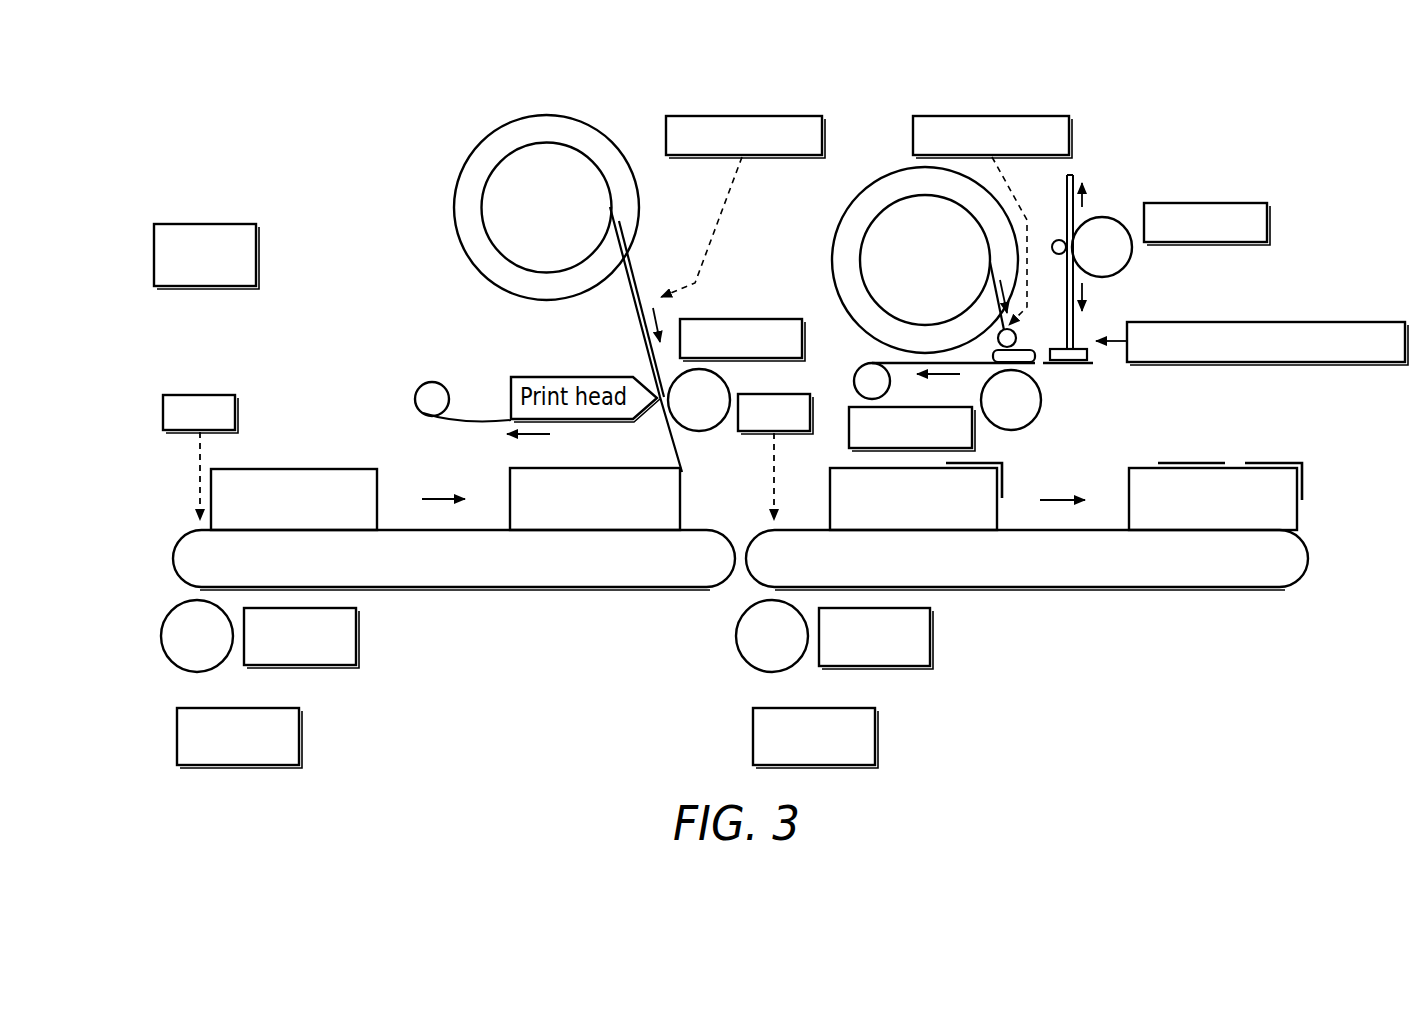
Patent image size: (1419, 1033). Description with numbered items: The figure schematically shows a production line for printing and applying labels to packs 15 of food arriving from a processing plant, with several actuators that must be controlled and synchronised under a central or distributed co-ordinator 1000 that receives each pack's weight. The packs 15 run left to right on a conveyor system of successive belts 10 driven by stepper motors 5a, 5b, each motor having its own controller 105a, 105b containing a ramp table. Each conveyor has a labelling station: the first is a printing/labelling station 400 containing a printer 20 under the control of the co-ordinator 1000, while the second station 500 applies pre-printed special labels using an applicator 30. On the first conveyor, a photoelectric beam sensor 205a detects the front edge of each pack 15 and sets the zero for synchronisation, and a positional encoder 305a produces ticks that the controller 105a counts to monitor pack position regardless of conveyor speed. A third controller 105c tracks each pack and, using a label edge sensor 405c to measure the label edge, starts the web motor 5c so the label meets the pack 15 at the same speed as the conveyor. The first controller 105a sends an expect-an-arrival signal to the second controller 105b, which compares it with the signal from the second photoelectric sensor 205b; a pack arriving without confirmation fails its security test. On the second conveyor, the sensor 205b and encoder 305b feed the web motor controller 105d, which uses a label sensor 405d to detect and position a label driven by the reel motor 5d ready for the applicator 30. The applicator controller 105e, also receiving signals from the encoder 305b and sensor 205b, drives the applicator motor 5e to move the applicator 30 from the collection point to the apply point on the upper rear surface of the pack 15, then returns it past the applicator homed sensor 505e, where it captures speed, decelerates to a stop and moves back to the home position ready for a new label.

The co-ordinator 1000 is at (152, 201).
The printing/labelling station 400 is at (426, 117).
The labelling station 500 is at (868, 88).
The printer 20 is at (560, 219).
The applicator 30 is at (939, 271).
The pack 15 is at (307, 511).
The conveyor belt 10 is at (466, 569).
The first conveyor motor 5a is at (161, 636).
The second conveyor motor 5b is at (736, 636).
The web motor 5c is at (729, 391).
The reel motor 5d is at (1042, 397).
The applicator motor 5e is at (1130, 258).
The first conveyor controller 105a is at (300, 723).
The second conveyor controller 105b is at (876, 723).
The web motor controller 105c is at (766, 319).
The second web motor controller 105d is at (973, 436).
The applicator controller 105e is at (1230, 203).
The first photoelectric sensor 205a is at (236, 410).
The second photoelectric sensor 205b is at (748, 434).
The first positional encoder 305a is at (357, 623).
The second positional encoder 305b is at (931, 623).
The label edge sensor 405c is at (786, 116).
The second label sensor 405d is at (1033, 116).
The applicator homed sensor 505e is at (1368, 322).